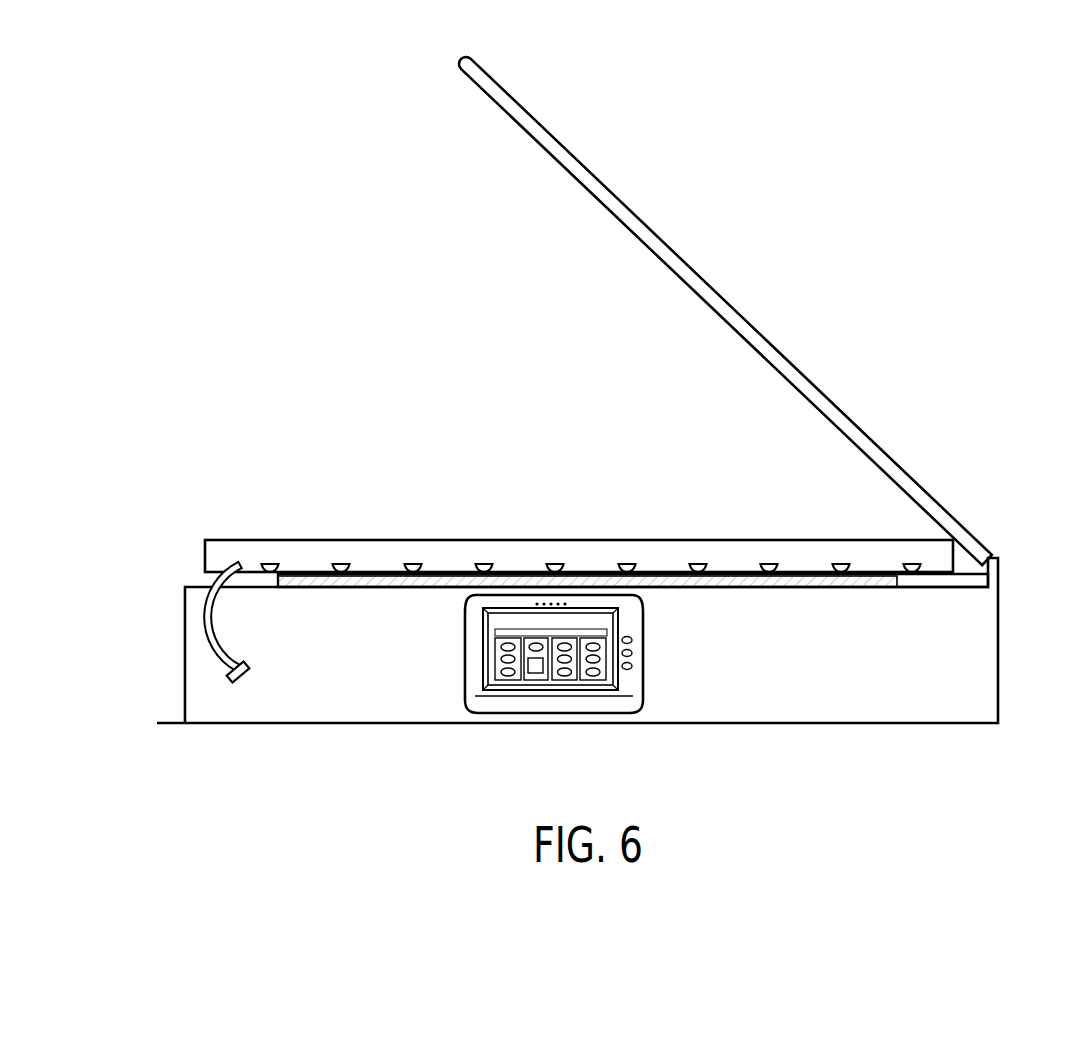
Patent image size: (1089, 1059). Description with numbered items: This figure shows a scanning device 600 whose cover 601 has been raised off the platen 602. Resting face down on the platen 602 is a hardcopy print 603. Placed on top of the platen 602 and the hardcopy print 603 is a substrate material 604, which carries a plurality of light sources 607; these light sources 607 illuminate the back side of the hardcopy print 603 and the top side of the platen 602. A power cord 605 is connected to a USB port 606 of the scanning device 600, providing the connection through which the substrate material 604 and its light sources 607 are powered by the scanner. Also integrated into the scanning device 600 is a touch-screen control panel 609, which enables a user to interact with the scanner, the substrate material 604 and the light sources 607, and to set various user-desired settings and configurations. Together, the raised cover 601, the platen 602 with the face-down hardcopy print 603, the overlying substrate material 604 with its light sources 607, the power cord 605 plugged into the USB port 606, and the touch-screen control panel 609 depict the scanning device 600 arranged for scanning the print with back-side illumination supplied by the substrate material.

The scanning device 600 is at (987, 707).
The cover 601 is at (800, 368).
The platen 602 is at (962, 588).
The hardcopy print 603 is at (307, 586).
The substrate material 604 is at (215, 540).
The power cord 605 is at (207, 628).
The USB port 606 is at (238, 683).
The light sources 607 is at (340, 563).
The touch-screen control panel 609 is at (577, 713).